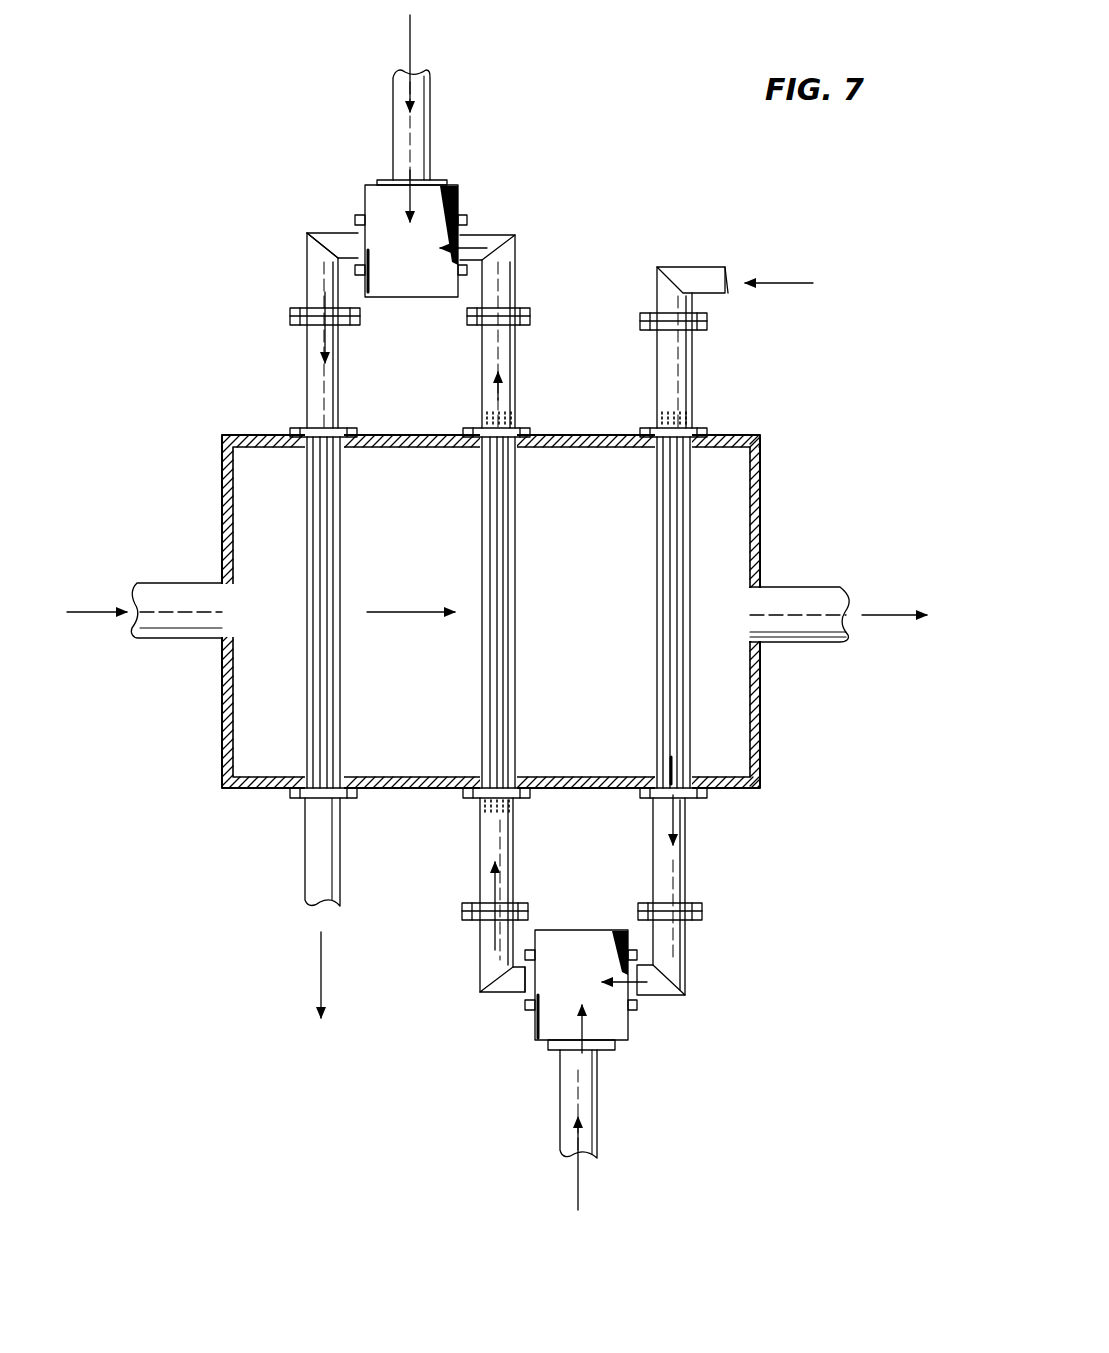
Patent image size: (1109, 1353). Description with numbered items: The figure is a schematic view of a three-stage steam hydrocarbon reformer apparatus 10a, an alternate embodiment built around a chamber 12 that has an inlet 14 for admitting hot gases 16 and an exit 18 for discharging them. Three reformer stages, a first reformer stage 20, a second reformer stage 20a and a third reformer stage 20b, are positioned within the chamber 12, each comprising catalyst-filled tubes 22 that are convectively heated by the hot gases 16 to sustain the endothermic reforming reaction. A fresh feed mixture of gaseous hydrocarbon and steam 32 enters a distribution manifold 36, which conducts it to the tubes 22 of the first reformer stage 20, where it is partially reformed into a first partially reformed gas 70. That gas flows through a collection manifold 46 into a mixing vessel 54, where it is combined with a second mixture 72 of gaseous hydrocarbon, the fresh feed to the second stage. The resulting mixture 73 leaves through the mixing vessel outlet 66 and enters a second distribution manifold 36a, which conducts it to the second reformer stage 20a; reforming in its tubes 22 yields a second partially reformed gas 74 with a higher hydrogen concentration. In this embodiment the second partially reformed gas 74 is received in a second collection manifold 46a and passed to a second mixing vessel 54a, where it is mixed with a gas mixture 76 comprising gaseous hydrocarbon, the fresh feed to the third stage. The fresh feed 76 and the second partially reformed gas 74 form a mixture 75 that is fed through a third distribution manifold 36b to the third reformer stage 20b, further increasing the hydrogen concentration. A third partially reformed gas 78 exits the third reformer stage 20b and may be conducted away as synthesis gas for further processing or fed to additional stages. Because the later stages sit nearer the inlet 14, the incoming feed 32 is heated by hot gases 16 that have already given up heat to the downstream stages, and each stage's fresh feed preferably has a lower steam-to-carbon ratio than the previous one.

The apparatus 10a is at (650, 176).
The chamber 12 is at (222, 500).
The inlet 14 is at (222, 622).
The hot gases 16 is at (117, 612).
The exit 18 is at (750, 607).
The first reformer stage 20 is at (673, 617).
The second reformer stage 20a is at (503, 545).
The third reformer stage 20b is at (328, 502).
The tubes 22 is at (673, 458).
The mixture of gaseous hydrocarbon and steam 32 is at (782, 283).
The distribution manifold 36 is at (660, 367).
The second distribution manifold 36a is at (480, 860).
The third distribution manifold 36b is at (318, 413).
The collection manifold 46 is at (685, 868).
The second collection manifold 46a is at (515, 343).
The mixing vessel 54 is at (642, 1040).
The second mixing vessel 54a is at (365, 187).
The mixing vessel outlet 66 is at (507, 993).
The first partially reformed gas 70 is at (685, 828).
The second mixture 72 is at (580, 1053).
The mixture 73 is at (495, 935).
The second partially reformed gas 74 is at (463, 248).
The mixture 75 is at (325, 292).
The fresh feed to the third stage 76 is at (410, 32).
The third partially reformed gas 78 is at (321, 962).